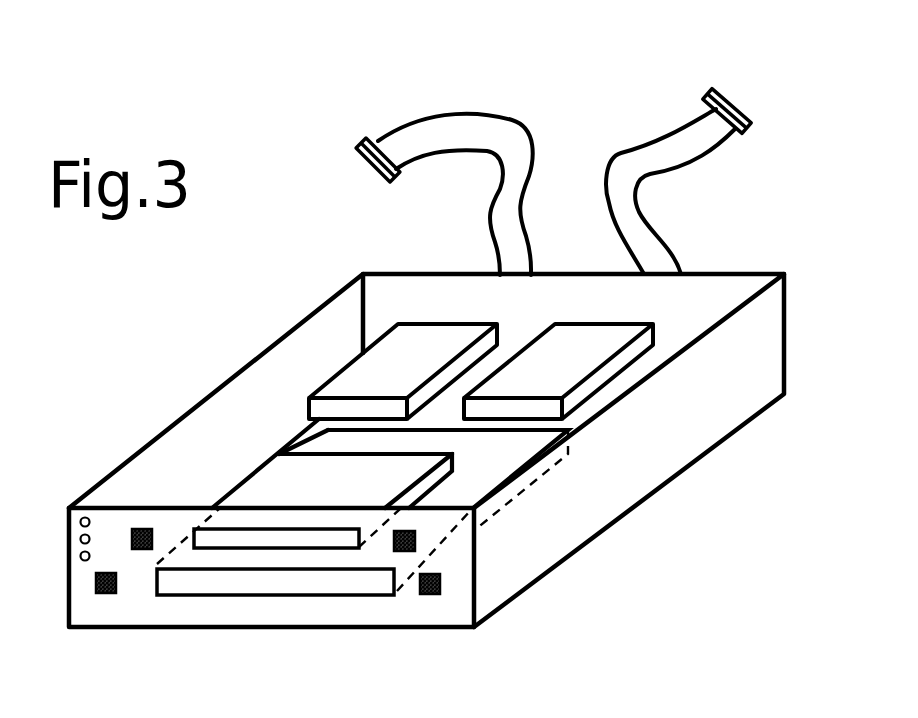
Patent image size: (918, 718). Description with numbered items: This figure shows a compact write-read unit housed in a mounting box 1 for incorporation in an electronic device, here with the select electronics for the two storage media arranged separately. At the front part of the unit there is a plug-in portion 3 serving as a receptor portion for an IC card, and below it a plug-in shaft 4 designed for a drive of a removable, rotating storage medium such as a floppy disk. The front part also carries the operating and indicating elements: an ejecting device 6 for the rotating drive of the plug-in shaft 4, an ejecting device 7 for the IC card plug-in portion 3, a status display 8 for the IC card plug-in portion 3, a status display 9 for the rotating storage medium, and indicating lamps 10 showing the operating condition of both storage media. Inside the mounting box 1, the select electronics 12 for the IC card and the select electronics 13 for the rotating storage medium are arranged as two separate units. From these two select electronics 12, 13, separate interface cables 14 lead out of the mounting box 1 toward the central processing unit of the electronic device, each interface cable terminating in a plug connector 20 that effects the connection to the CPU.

The mounting box 1 is at (645, 440).
The plug-in portion 3 is at (325, 533).
The plug-in shaft 4 is at (196, 575).
The ejecting device 6 is at (422, 588).
The ejecting device 7 is at (407, 540).
The status display 8 is at (132, 521).
The status display 9 is at (96, 586).
The indicating lamps 10 is at (72, 530).
The select electronics 12 is at (394, 353).
The select electronics 13 is at (599, 332).
The interface cables 14 is at (620, 158).
The plug connector 20 is at (365, 168).